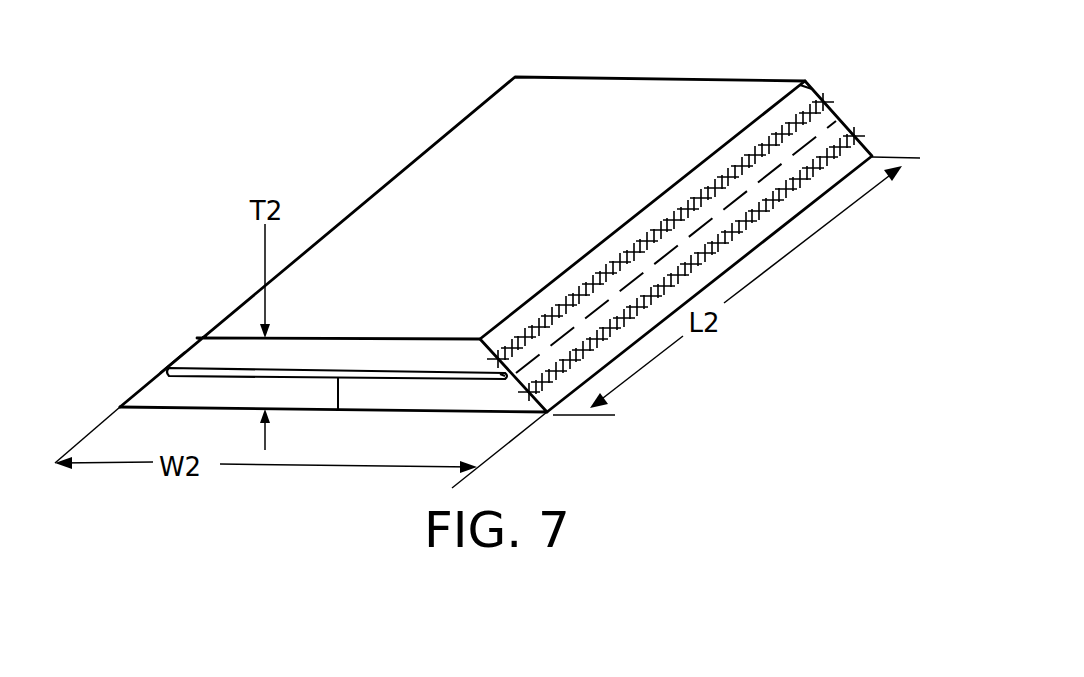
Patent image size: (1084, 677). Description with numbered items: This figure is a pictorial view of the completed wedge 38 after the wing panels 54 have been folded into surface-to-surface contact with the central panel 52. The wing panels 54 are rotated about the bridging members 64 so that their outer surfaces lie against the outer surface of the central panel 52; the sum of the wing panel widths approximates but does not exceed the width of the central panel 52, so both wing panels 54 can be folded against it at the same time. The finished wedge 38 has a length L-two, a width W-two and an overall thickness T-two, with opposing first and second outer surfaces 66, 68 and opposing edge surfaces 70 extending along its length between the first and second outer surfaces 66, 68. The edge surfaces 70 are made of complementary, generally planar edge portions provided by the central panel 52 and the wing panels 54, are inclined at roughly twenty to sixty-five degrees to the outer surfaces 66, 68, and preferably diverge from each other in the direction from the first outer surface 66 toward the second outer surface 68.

The wedge 38 is at (718, 68).
The central panel 52 is at (398, 358).
The wing panels 54 is at (212, 393).
The bridging members 64 is at (510, 393).
The first outer surface 66 is at (388, 412).
The second outer surface 68 is at (230, 328).
The edge surfaces 70 is at (172, 352).